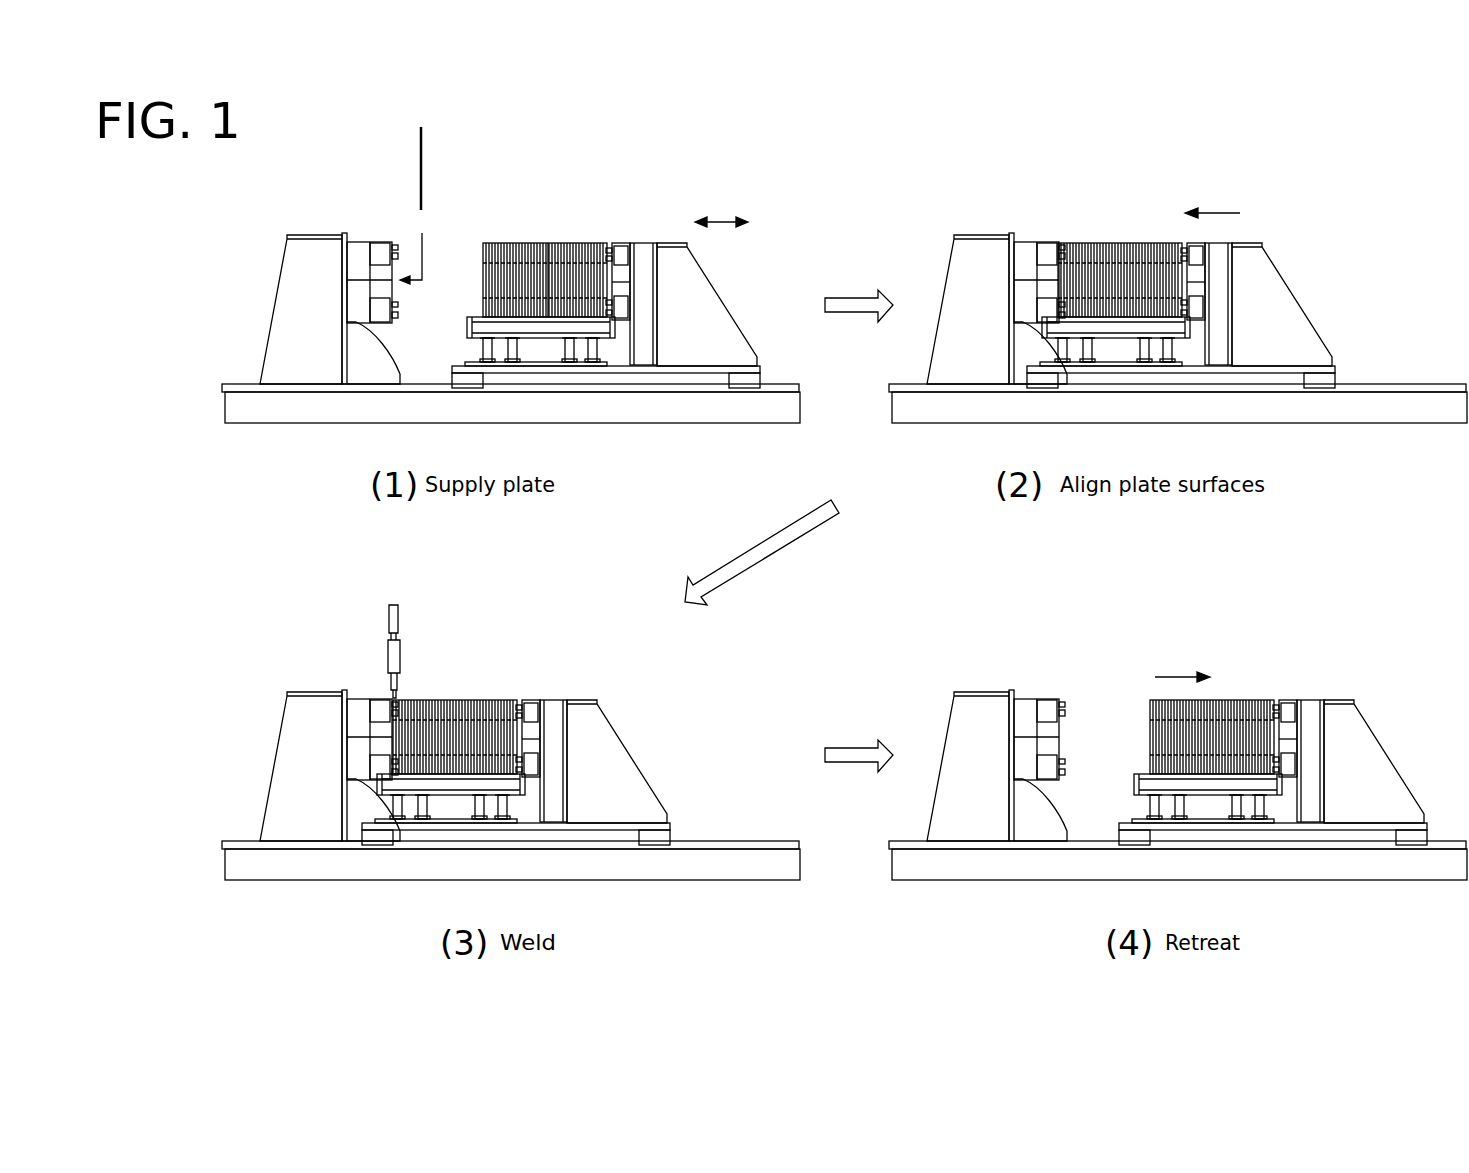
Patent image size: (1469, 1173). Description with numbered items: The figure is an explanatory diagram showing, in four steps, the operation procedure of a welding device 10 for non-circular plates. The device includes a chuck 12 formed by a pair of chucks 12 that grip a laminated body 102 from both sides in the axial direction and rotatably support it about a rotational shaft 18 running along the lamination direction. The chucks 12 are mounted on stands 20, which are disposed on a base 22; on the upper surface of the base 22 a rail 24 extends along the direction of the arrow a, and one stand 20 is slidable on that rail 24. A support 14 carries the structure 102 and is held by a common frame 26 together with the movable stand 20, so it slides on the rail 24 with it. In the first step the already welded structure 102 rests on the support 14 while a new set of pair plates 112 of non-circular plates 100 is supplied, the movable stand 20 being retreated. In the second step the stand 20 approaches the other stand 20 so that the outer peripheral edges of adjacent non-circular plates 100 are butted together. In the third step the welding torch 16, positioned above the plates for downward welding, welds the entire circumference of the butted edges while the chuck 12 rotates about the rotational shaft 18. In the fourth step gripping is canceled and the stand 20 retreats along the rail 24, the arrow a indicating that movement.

The welding device 10 is at (778, 143).
The chuck 12 is at (377, 268).
The support 14 is at (475, 322).
The welding torch 16 is at (400, 660).
The rotational shaft 18 is at (377, 250).
The stand 20 is at (285, 300).
The base 22 is at (775, 412).
The rail 24 is at (775, 385).
The common frame 26 is at (760, 378).
The non-circular plate 100 is at (423, 172).
The pair plate 112 is at (548, 243).
The laminated body 102 is at (505, 243).
The arrow direction a is at (725, 220).